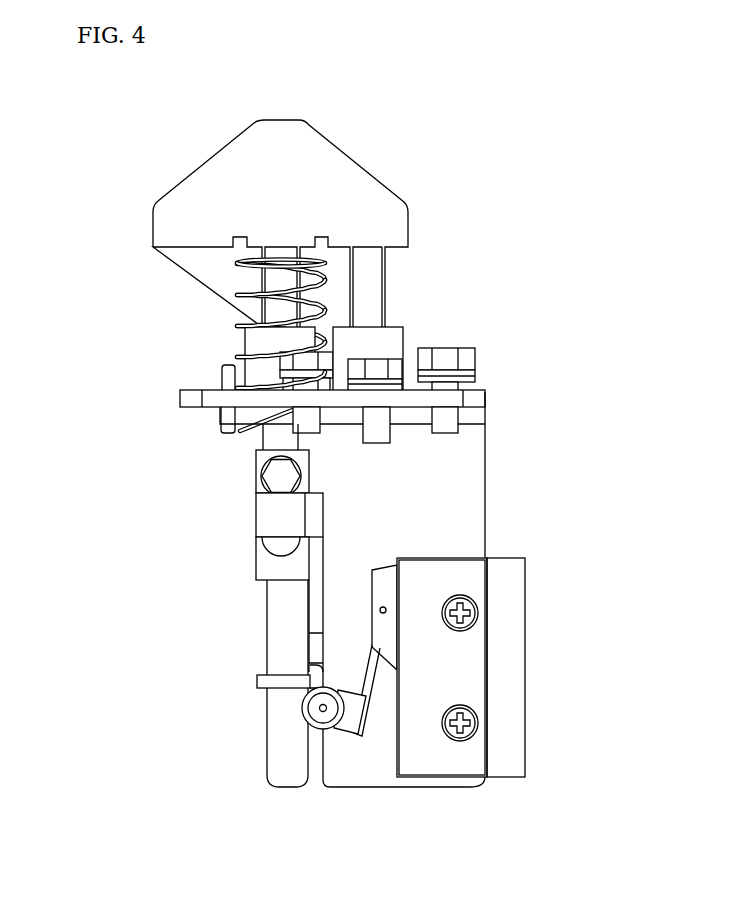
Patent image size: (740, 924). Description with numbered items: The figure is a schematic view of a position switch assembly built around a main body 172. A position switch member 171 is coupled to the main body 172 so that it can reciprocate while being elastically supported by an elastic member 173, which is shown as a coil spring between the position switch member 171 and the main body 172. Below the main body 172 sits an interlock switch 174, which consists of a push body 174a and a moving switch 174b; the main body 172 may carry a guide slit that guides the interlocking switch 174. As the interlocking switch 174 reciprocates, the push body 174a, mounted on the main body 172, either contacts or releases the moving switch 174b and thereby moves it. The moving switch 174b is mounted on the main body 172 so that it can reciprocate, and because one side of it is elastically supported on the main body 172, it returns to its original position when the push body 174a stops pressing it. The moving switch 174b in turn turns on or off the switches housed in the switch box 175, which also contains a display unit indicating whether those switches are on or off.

The position switch member 171 is at (337, 165).
The main body 172 is at (477, 397).
The elastic member 173 is at (281, 332).
The interlock switch 174 is at (146, 647).
The push body 174a is at (310, 677).
The moving switch 174b is at (302, 707).
The switch box 175 is at (440, 572).